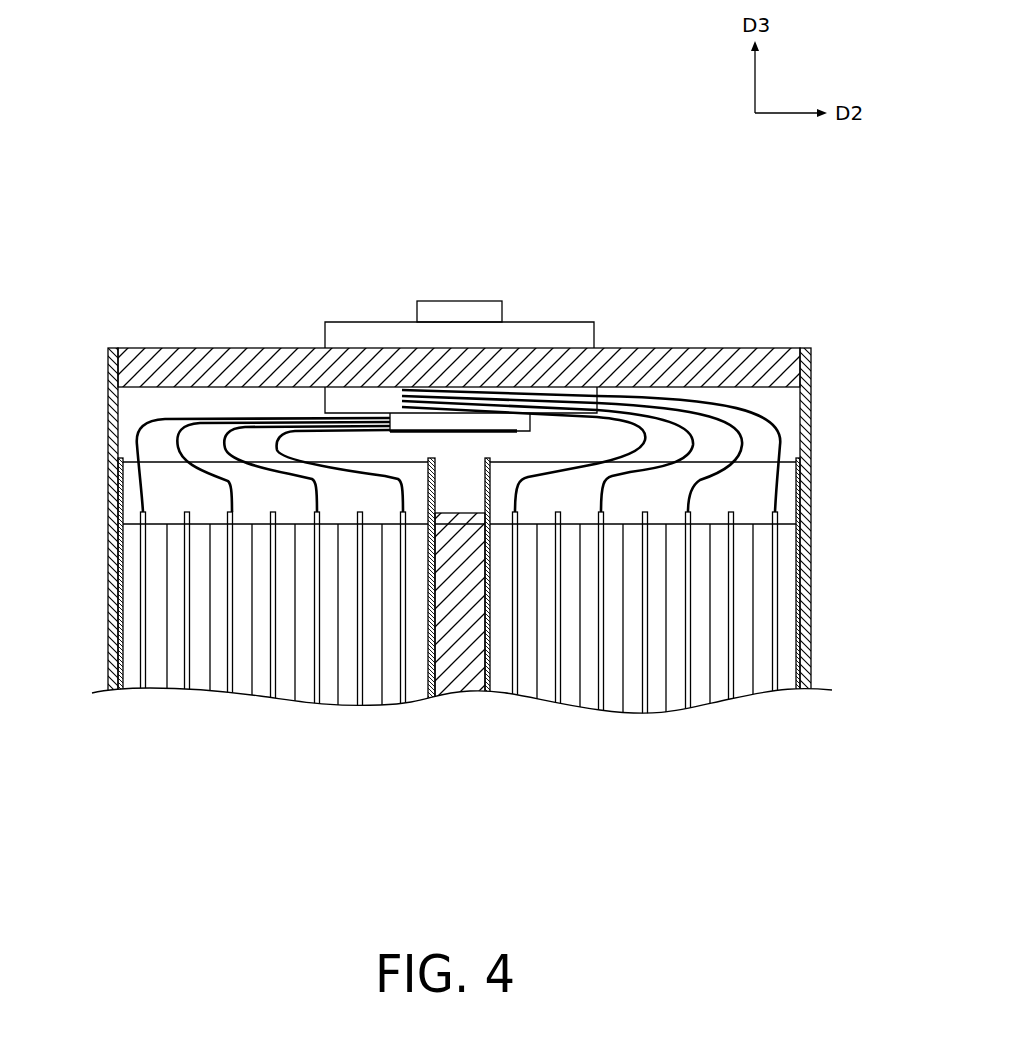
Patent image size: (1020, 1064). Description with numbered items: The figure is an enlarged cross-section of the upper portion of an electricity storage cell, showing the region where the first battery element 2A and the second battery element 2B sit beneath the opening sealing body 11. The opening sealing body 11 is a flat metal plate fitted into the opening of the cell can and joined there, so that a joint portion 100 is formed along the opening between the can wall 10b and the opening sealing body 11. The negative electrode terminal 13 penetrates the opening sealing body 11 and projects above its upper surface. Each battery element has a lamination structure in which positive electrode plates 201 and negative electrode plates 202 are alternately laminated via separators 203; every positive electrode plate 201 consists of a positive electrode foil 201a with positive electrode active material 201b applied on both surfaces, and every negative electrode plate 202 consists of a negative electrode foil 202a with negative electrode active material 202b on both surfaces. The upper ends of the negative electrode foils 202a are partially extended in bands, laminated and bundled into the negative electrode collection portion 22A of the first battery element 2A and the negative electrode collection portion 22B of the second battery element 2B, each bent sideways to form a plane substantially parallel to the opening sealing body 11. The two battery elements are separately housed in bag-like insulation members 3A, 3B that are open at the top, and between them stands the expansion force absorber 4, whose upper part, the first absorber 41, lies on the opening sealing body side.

The joint portion 100 is at (463, 463).
The opening sealing body 11 is at (733, 347).
The negative electrode terminal 13 is at (461, 301).
The side wall of outer can 10b is at (112, 419).
The negative electrode collection portion 22A is at (513, 392).
The negative electrode collection portion 22B is at (308, 414).
The insulation member 3A is at (800, 487).
The insulation member 3B is at (128, 487).
The expansion force absorber 4 is at (465, 665).
The first absorber 41 is at (457, 673).
The first battery element 2A is at (712, 718).
The second battery element 2B is at (178, 716).
The positive electrode plate 201 is at (459, 658).
The positive electrode foil 201a is at (270, 660).
The positive electrode active material 201b is at (262, 643).
The negative electrode plate 202 is at (459, 677).
The negative electrode foil 202a is at (312, 672).
The negative electrode active material 202b is at (330, 673).
The separator 203 is at (167, 674).